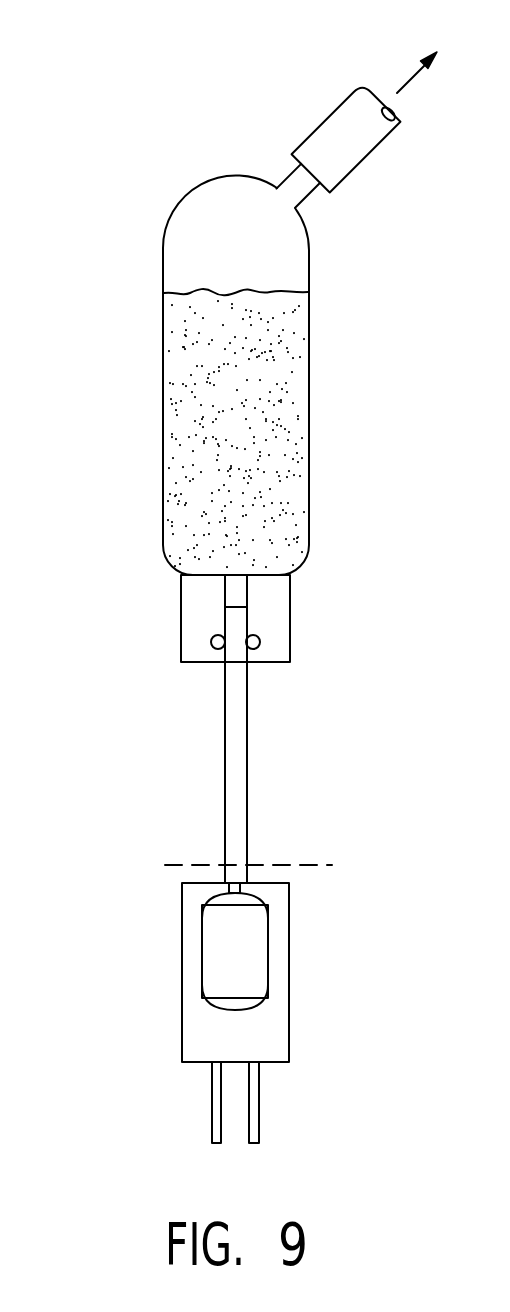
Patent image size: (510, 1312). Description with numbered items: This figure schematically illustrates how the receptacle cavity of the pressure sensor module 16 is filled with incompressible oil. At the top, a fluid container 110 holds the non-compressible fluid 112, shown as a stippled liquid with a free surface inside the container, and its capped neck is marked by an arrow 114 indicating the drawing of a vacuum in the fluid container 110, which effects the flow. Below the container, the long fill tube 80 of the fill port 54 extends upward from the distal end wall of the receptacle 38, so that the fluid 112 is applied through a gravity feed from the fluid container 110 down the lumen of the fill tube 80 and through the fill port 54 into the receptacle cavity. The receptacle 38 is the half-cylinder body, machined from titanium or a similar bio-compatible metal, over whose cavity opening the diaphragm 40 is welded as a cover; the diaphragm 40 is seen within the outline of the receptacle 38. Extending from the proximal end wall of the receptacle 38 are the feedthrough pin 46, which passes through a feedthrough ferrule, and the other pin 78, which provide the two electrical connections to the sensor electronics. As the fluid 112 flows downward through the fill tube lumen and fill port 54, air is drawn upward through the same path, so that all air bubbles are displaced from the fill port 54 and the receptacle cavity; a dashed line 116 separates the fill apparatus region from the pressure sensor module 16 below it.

The pressure sensor module 16 is at (190, 1013).
The receptacle 38 is at (195, 1032).
The diaphragm 40 is at (213, 940).
The feedthrough pin 46 is at (211, 1112).
The fill port 54 is at (240, 886).
The pin 78 is at (260, 1117).
The fill tube 80 is at (266, 733).
The fluid container 110 is at (309, 452).
The non-compressible fluid 112 is at (290, 355).
The flow direction arrow 114 is at (413, 72).
The separation line 116 is at (297, 865).